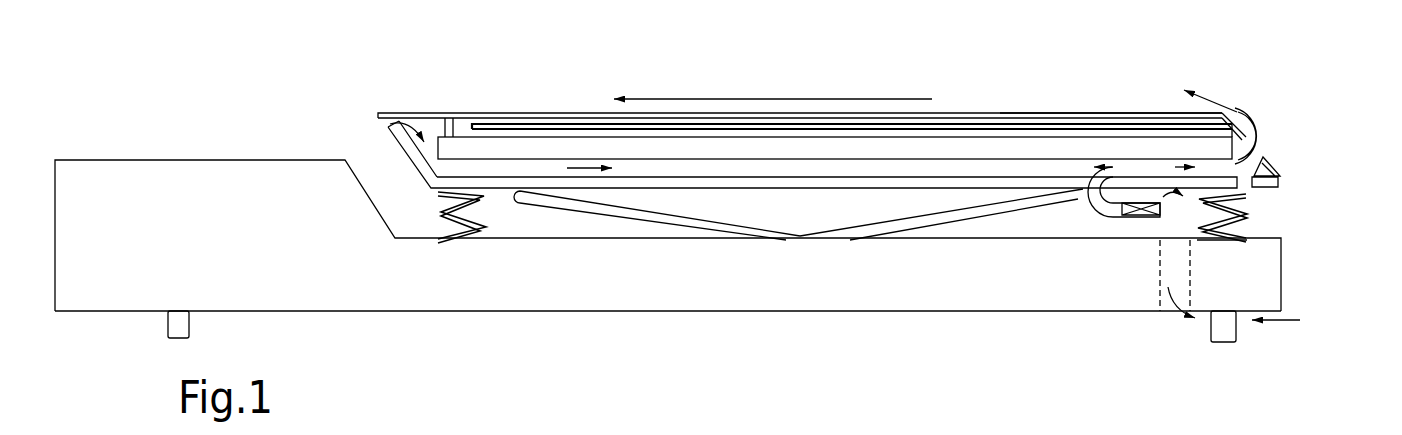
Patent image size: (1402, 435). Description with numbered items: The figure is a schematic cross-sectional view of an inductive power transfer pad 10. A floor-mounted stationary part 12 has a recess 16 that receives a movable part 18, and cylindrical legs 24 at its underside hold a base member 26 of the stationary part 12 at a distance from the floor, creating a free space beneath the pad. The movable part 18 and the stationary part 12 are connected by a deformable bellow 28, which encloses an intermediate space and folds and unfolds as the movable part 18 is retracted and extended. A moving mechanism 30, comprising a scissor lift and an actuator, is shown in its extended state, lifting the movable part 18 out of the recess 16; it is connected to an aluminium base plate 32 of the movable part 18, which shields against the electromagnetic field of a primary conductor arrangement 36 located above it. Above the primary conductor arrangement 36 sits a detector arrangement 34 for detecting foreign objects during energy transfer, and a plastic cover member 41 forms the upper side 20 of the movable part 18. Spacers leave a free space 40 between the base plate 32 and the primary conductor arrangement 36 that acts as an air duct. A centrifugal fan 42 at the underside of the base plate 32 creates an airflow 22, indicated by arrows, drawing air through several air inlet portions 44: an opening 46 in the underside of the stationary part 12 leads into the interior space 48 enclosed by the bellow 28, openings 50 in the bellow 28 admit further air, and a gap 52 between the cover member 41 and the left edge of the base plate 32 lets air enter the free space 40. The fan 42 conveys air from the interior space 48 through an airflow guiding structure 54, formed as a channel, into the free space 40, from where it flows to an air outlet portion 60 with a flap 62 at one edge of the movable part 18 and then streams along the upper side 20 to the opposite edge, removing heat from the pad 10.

The inductive power transfer pad 10 is at (170, 113).
The stationary part 12 is at (229, 185).
The recess 16 is at (368, 140).
The movable part 18 is at (458, 80).
The upper side 20 is at (1043, 75).
The airflow 22 is at (823, 97).
The cylindrical legs 24 is at (183, 322).
The base member 26 is at (105, 292).
The deformable bellow 28 is at (1240, 192).
The moving mechanism 30 is at (590, 225).
The aluminium base plate 32 is at (397, 124).
The detector arrangement 34 is at (550, 127).
The primary conductor arrangement 36 is at (480, 145).
The free space 40 is at (930, 165).
The cover member 41 is at (1090, 110).
The centrifugal fan 42 is at (1135, 215).
The air inlet portions 44 is at (367, 110).
The opening 46 is at (1183, 263).
The interior space 48 is at (1040, 218).
The openings 50 is at (1250, 216).
The gap 52 is at (394, 120).
The airflow guiding structure 54 is at (1088, 215).
The air outlet portion 60 is at (1280, 118).
The flap 62 is at (1262, 108).